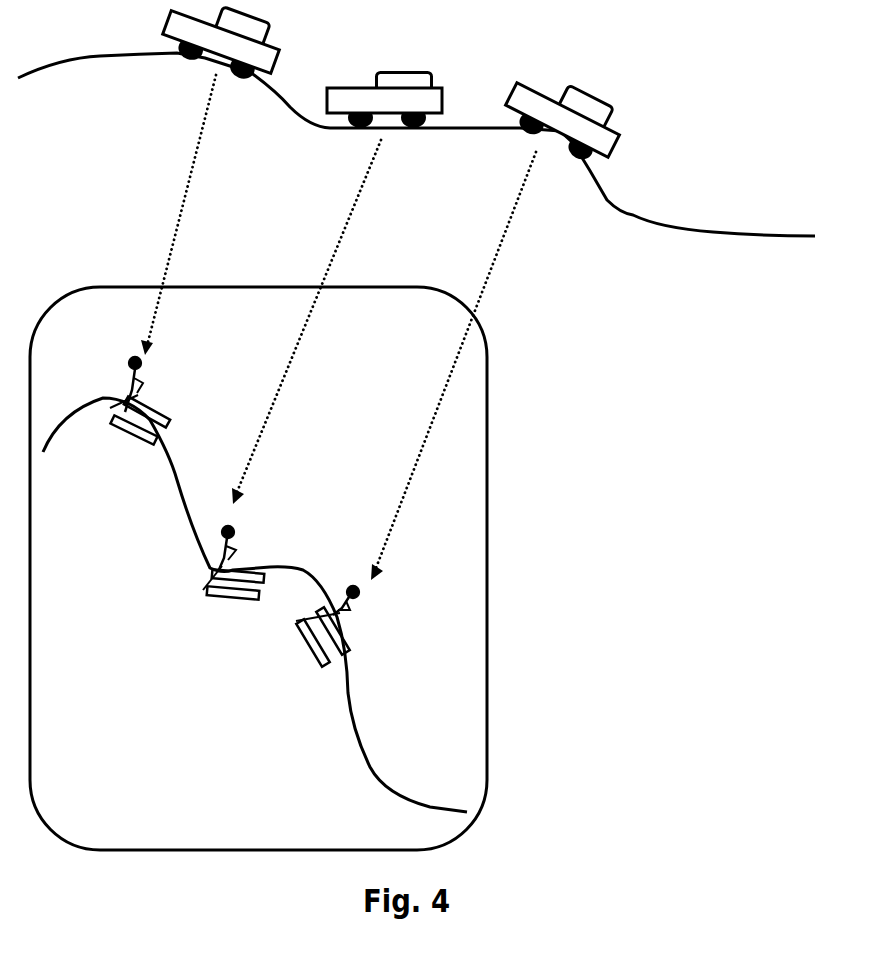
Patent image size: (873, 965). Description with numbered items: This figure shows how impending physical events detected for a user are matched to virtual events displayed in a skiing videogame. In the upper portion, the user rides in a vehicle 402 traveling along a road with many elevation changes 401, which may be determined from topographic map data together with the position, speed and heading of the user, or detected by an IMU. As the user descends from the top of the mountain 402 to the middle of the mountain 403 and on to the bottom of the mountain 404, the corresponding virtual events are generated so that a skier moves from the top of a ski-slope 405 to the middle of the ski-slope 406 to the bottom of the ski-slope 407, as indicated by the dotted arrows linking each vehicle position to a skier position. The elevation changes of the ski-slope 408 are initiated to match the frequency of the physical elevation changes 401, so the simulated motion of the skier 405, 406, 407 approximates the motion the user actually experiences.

The elevation change 401 is at (416, 144).
The vehicle at top of mountain 402 is at (239, 43).
The vehicle at middle of mountain 403 is at (403, 93).
The vehicle at bottom of mountain 404 is at (583, 117).
The skier at top of ski-slope 405 is at (158, 401).
The skier at middle of ski-slope 406 is at (251, 557).
The skier at bottom of ski-slope 407 is at (361, 622).
The elevation changes of ski-slope 408 is at (255, 605).